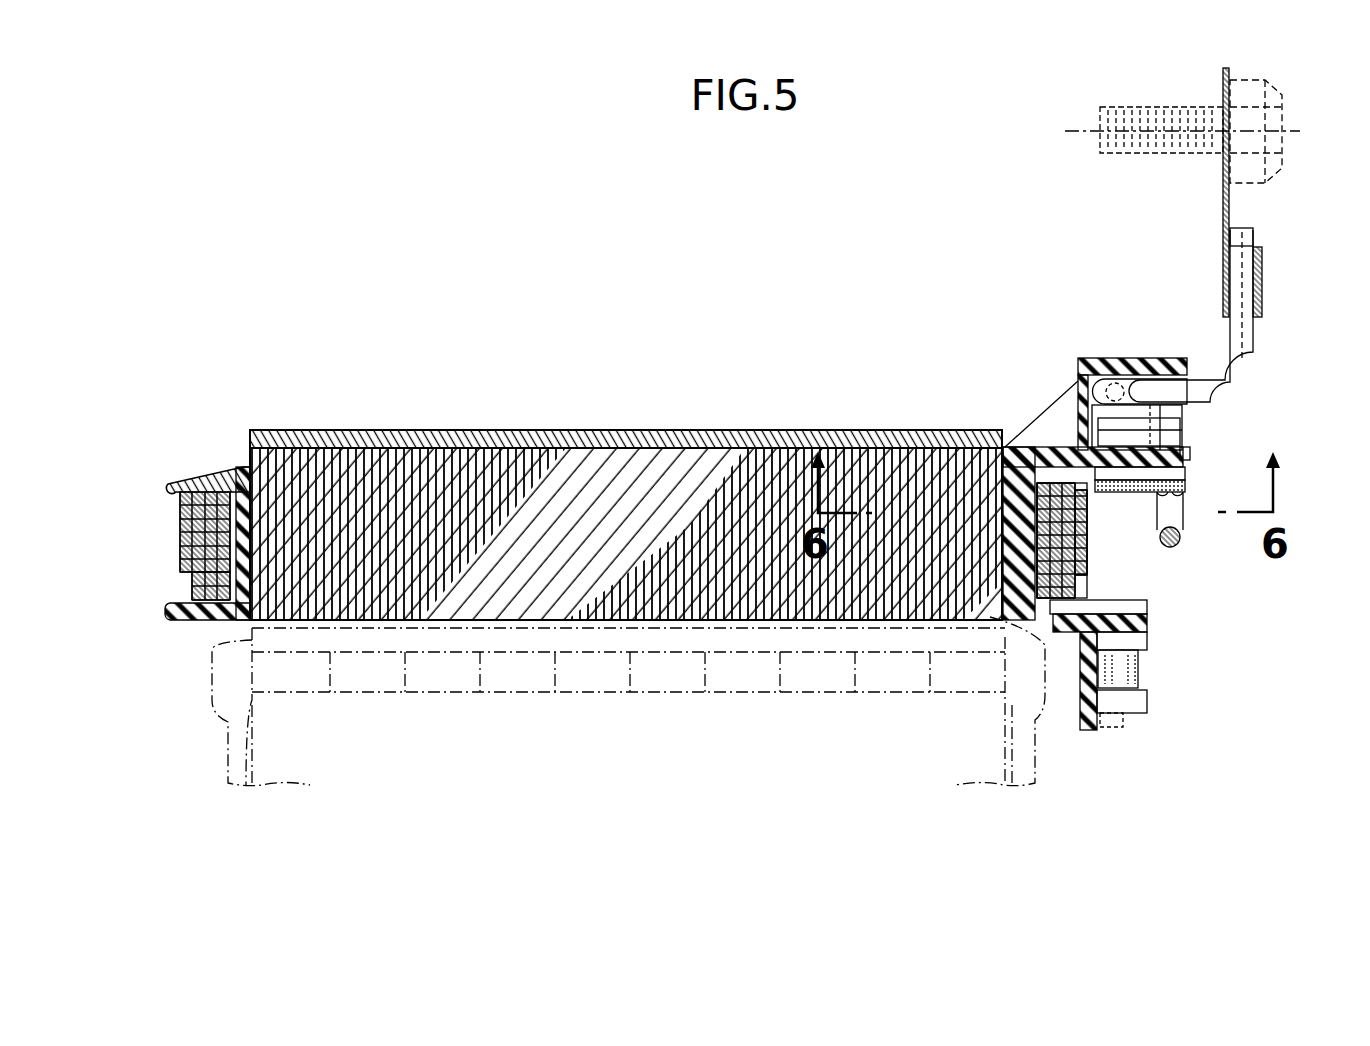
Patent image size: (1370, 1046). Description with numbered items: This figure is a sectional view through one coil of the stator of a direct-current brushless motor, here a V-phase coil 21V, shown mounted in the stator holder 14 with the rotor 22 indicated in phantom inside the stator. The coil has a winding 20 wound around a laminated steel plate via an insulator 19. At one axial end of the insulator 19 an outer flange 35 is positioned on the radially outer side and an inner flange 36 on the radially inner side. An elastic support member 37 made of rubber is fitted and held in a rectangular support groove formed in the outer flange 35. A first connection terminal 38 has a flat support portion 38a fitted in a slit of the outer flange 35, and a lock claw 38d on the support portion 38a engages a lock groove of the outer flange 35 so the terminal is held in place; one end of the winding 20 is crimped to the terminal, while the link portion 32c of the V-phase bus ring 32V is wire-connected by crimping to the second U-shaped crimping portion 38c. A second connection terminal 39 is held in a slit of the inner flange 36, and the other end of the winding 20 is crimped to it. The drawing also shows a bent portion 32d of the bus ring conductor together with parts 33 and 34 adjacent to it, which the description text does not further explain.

The stator holder 14 is at (555, 430).
The insulator 19 is at (1055, 377).
The winding 20 is at (180, 548).
The V-phase coil 21V is at (211, 450).
The rotor 22 is at (214, 746).
The link portion 32c is at (1178, 522).
The lead wire bent portion 32d is at (1245, 356).
The V-phase bus ring 32V is at (1178, 556).
The bracket 33 is at (1223, 203).
The bolt 34 is at (1256, 166).
The outer flange 35 is at (1120, 352).
The inner flange 36 is at (1158, 628).
The elastic support member 37 is at (1143, 492).
The first connection terminal 38 is at (1192, 437).
The support portion 38a is at (1133, 482).
The second U-shaped crimping portion 38c is at (1090, 437).
The lock claw 38d is at (1182, 450).
The second connection terminal 39 is at (1140, 670).